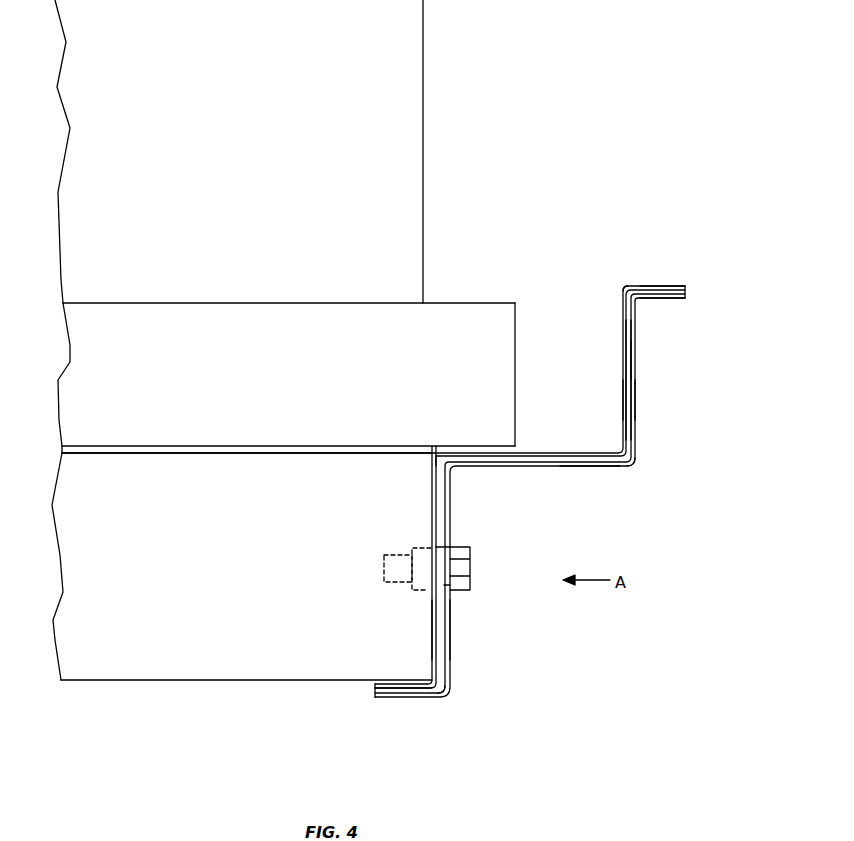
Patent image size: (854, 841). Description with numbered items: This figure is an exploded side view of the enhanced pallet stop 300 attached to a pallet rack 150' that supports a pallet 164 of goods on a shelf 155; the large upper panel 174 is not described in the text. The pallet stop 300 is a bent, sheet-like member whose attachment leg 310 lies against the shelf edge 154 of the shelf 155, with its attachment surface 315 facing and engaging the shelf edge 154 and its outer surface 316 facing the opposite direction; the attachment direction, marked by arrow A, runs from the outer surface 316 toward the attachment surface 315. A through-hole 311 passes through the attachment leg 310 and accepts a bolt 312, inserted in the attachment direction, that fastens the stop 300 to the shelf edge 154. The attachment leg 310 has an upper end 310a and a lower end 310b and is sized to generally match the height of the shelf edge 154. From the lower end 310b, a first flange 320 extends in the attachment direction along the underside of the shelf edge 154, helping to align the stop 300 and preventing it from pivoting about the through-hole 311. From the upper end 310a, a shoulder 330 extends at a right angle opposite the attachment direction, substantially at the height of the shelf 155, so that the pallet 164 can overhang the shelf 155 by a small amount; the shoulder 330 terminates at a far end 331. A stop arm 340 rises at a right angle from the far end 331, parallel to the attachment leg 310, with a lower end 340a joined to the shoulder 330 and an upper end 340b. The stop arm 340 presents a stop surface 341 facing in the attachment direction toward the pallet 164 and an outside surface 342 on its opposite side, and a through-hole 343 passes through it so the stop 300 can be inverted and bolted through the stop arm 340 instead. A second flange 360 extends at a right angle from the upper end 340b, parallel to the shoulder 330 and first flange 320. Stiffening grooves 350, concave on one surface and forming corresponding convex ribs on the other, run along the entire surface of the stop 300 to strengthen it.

The upper panel 174 is at (263, 118).
The pallet 164 is at (262, 383).
The pallet rack 150' is at (242, 563).
The shelf 155 is at (340, 453).
The shelf edge 154 is at (433, 460).
The enhanced pallet stop 300 is at (405, 494).
The attachment leg 310 is at (446, 512).
The upper end of attachment leg 310a is at (441, 460).
The lower end of attachment leg 310b is at (452, 697).
The through-hole 311 is at (446, 543).
The bolt 312 is at (472, 582).
The attachment surface 315 is at (438, 635).
The outer surface 316 is at (448, 622).
The first flange 320 is at (410, 689).
The shoulder 330 is at (563, 453).
The far end of shoulder 331 is at (598, 467).
The stop arm 340 is at (637, 427).
The lower end of stop arm 340a is at (638, 462).
The upper end of stop arm 340b is at (628, 286).
The stop surface 341 is at (622, 397).
The outside surface 342 is at (636, 395).
The through-hole 343 is at (636, 355).
The stiffening grooves 350 is at (638, 330).
The second flange 360 is at (660, 286).